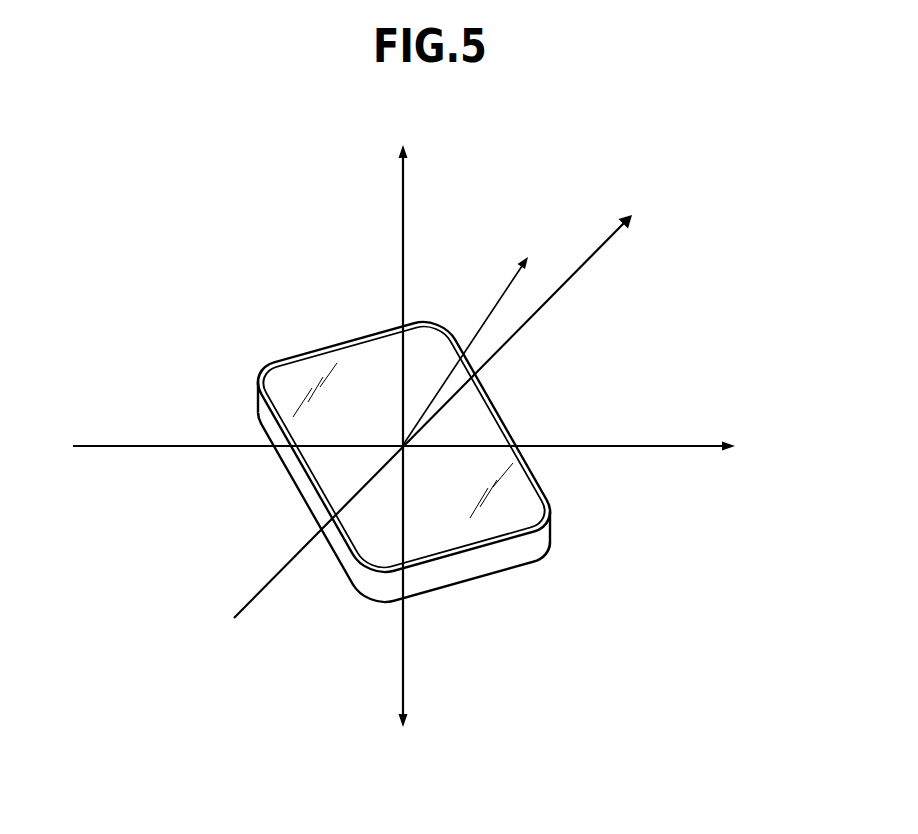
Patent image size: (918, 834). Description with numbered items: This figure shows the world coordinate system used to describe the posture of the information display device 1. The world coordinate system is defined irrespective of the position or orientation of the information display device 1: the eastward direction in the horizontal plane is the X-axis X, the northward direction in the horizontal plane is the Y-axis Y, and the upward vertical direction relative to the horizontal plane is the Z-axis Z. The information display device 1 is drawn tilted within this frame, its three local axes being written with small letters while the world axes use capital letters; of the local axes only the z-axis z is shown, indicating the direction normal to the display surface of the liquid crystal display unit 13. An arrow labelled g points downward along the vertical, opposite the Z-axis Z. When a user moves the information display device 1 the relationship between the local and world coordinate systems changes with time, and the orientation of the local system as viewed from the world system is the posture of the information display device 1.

The information display device 1 is at (445, 431).
The liquid crystal display unit 13 is at (517, 491).
The X-axis X is at (417, 446).
The Y-axis Y is at (511, 407).
The Z-axis Z is at (402, 282).
The gravity direction g is at (415, 586).
The z-axis z is at (468, 338).